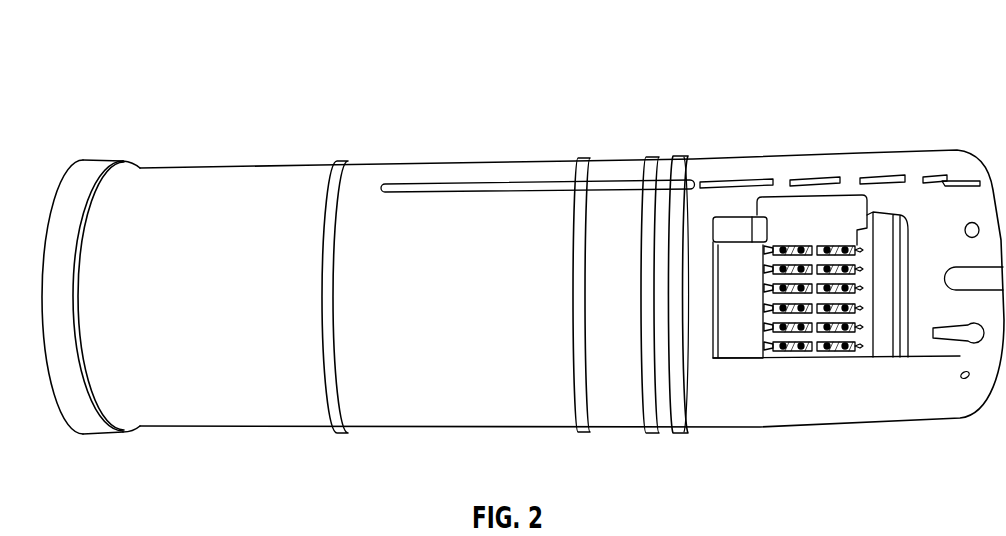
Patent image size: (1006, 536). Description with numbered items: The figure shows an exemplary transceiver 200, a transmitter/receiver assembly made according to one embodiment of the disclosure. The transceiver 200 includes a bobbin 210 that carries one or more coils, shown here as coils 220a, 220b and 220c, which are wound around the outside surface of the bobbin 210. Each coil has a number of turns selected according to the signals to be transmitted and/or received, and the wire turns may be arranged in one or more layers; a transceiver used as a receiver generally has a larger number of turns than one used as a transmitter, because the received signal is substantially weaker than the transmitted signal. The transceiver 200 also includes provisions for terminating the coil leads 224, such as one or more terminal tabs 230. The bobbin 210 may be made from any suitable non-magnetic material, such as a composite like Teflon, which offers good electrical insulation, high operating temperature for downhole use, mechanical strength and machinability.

The transceiver 200 is at (895, 83).
The bobbin 210 is at (900, 170).
The coil 220a is at (213, 403).
The coil 220b is at (445, 408).
The coil 220c is at (603, 412).
The coil leads 224 is at (804, 178).
The terminal tabs 230 is at (843, 350).